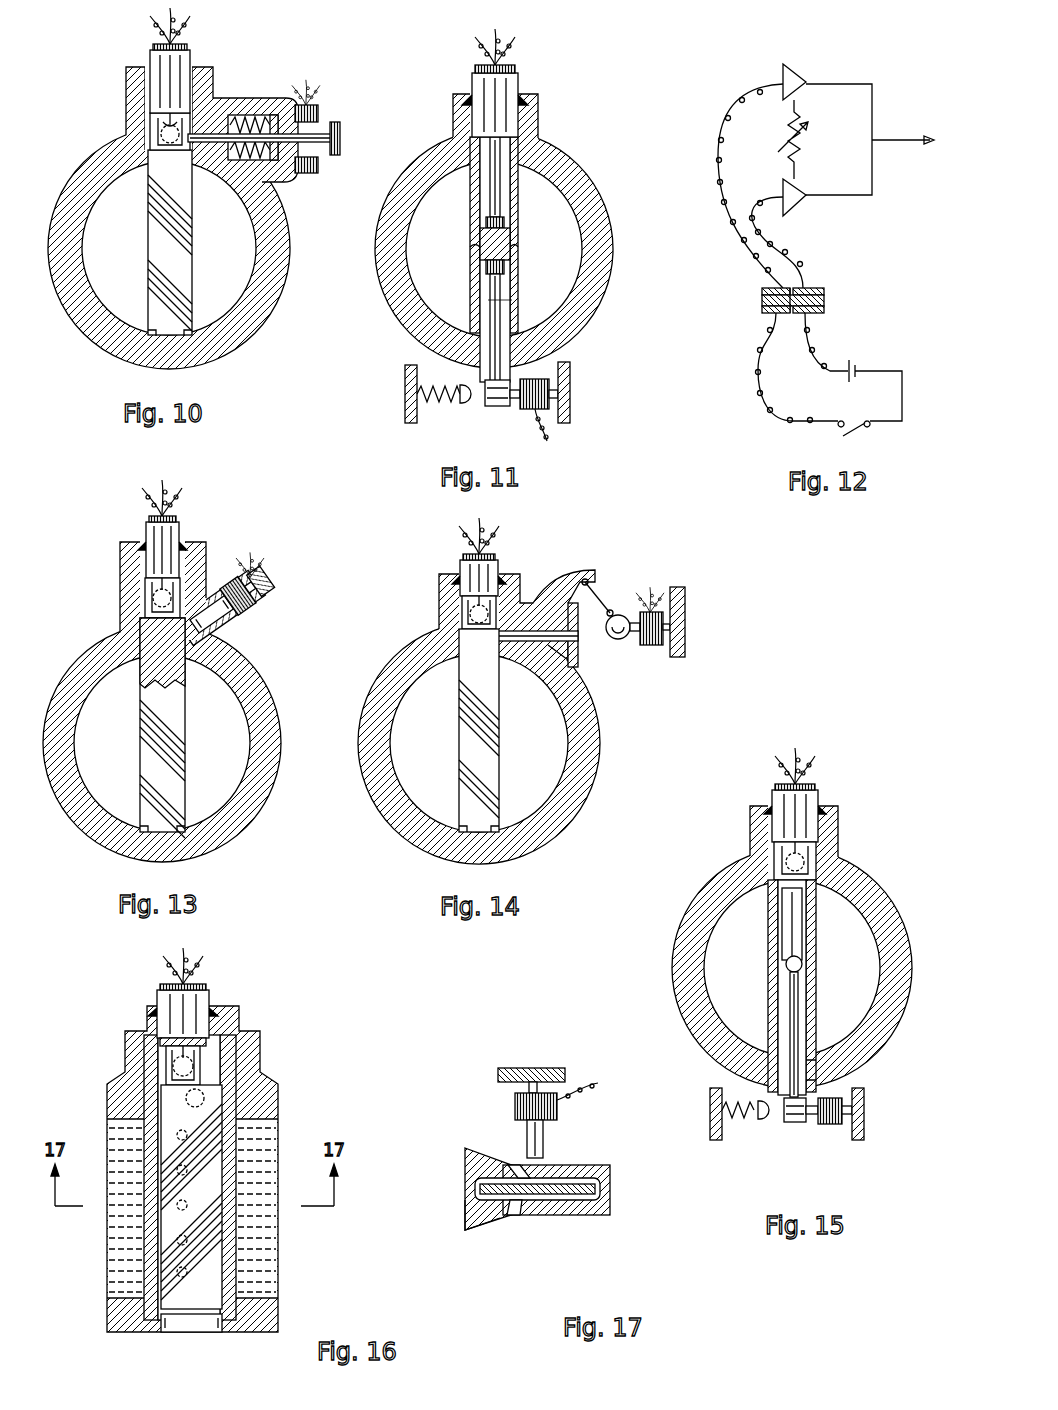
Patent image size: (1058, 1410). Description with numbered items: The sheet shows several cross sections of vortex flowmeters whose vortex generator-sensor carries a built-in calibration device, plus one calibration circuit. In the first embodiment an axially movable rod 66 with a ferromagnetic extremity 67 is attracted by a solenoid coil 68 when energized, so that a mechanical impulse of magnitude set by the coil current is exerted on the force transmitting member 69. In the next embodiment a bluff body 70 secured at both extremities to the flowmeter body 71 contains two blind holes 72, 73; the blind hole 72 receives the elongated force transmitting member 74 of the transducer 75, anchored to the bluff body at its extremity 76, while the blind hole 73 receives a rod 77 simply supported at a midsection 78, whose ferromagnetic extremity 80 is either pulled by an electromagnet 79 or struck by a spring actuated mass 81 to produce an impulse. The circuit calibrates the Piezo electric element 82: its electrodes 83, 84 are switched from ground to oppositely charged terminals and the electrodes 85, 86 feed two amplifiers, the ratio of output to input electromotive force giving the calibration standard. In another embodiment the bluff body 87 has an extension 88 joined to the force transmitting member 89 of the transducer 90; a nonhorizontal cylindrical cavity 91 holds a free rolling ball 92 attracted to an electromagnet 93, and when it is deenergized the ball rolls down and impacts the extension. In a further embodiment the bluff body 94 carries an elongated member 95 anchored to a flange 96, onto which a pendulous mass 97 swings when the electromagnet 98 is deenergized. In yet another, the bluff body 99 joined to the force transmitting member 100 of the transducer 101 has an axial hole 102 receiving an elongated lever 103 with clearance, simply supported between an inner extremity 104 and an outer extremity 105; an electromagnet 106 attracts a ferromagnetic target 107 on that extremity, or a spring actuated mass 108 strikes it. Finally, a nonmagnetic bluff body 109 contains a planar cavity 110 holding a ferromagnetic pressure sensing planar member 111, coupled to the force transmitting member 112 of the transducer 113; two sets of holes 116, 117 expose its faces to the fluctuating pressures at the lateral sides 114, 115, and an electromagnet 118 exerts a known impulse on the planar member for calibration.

In FIG. 10, the rod 66 is at (220, 136).
In FIG. 10, the ferromagnetic extremity 67 is at (340, 124).
In FIG. 10, the solenoid coil 68 is at (308, 105).
In FIG. 10, the force transmitting member 69 is at (152, 135).
In FIG. 10, the bluff body 70 is at (170, 243).
In FIG. 11, the bluff body 70 is at (478, 215).
In FIG. 11, the flowmeter body 71 is at (560, 165).
In FIG. 11, the blind hole 72 is at (514, 172).
In FIG. 11, the blind hole 73 is at (512, 255).
In FIG. 11, the elongated force transmitting member 74 is at (486, 175).
In FIG. 11, the transducer 75 is at (493, 100).
In FIG. 11, the extremity 76 is at (482, 195).
In FIG. 11, the rod 77 is at (482, 255).
In FIG. 11, the midsection 78 is at (512, 300).
In FIG. 11, the electromagnet 79 is at (540, 412).
In FIG. 11, the ferromagnetic extremity 80 is at (492, 406).
In FIG. 11, the spring actuated mass 81 is at (460, 392).
In FIG. 12, the Piezo electric element 82 is at (826, 300).
In FIG. 12, the electrode 83 is at (766, 314).
In FIG. 12, the electrode 84 is at (816, 314).
In FIG. 12, the electrode 85 is at (766, 290).
In FIG. 12, the electrode 86 is at (816, 288).
In FIG. 13, the bluff body 87 is at (140, 752).
In FIG. 13, the extension 88 is at (150, 640).
In FIG. 13, the force transmitting member 89 is at (145, 582).
In FIG. 13, the transducer 90 is at (152, 545).
In FIG. 13, the cylindrical cavity 91 is at (195, 660).
In FIG. 13, the free rolling ball 92 is at (210, 626).
In FIG. 13, the electromagnet 93 is at (252, 588).
In FIG. 14, the bluff body 94 is at (470, 775).
In FIG. 14, the elongated member 95 is at (535, 628).
In FIG. 14, the flange 96 is at (578, 650).
In FIG. 14, the pendulous mass 97 is at (620, 615).
In FIG. 14, the electromagnet 98 is at (652, 646).
In FIG. 15, the bluff body 99 is at (782, 920).
In FIG. 15, the force transmitting member 100 is at (822, 850).
In FIG. 15, the transducer 101 is at (774, 812).
In FIG. 15, the axial hole 102 is at (790, 900).
In FIG. 15, the elongated lever 103 is at (790, 990).
In FIG. 15, the extremity 104 is at (800, 958).
In FIG. 15, the extremity 105 is at (817, 1092).
In FIG. 15, the electromagnet 106 is at (830, 1124).
In FIG. 15, the ferromagnetic target 107 is at (795, 1122).
In FIG. 15, the spring actuated mass 108 is at (766, 1120).
In FIG. 16, the bluff body 109 is at (144, 1195).
In FIG. 17, the bluff body 109 is at (475, 1189).
In FIG. 16, the planar cavity 110 is at (222, 1200).
In FIG. 17, the planar cavity 110 is at (575, 1165).
In FIG. 16, the pressure sensing planar member 111 is at (218, 1250).
In FIG. 17, the pressure sensing planar member 111 is at (575, 1200).
In FIG. 16, the force transmitting member 112 is at (200, 1068).
In FIG. 16, the transducer 113 is at (185, 1012).
In FIG. 17, the lateral side 114 is at (492, 1160).
In FIG. 17, the lateral side 115 is at (488, 1228).
In FIG. 17, the holes 116 is at (520, 1167).
In FIG. 17, the holes 117 is at (515, 1213).
In FIG. 17, the electromagnet 118 is at (560, 1105).